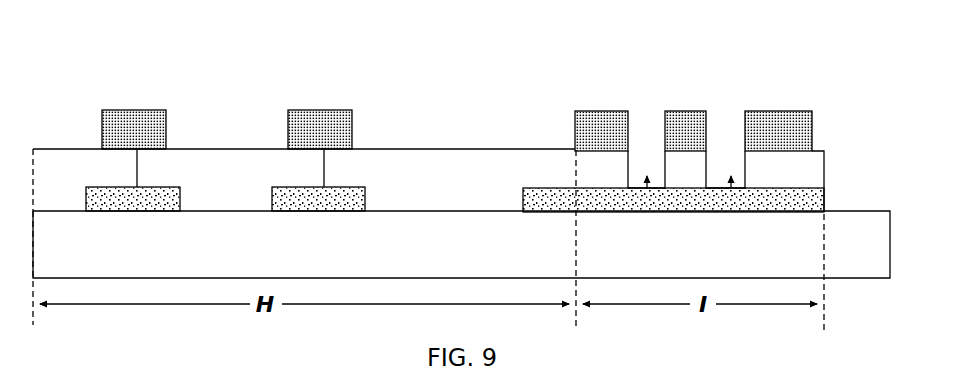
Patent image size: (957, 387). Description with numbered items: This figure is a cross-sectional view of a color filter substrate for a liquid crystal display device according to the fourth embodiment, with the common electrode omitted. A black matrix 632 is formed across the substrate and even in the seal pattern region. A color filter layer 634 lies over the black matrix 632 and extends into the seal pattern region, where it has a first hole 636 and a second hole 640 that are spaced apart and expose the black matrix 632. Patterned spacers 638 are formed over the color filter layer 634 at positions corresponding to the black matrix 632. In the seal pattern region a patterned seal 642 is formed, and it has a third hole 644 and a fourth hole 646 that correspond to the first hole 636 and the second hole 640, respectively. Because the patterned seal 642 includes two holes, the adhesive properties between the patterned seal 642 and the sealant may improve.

The black matrix 632 is at (153, 200).
The color filter layer 634 is at (57, 162).
The first hole 636 is at (647, 190).
The patterned spacers 638 is at (133, 122).
The second hole 640 is at (730, 190).
The patterned seal 642 is at (600, 128).
The third hole 644 is at (647, 126).
The fourth hole 646 is at (733, 125).